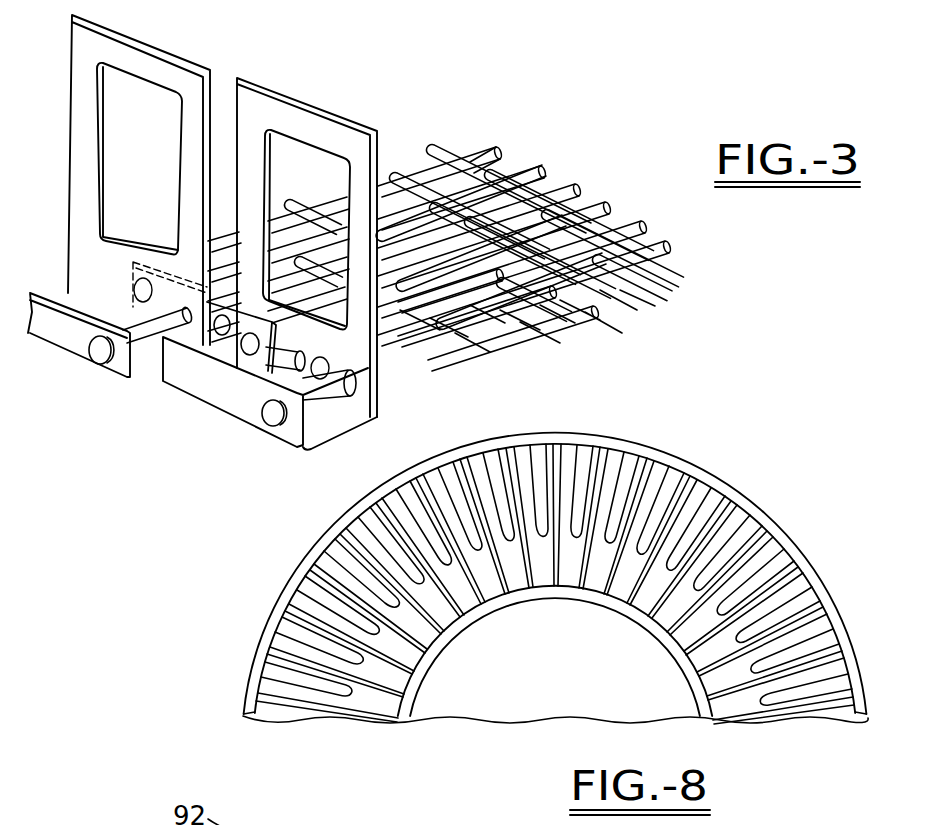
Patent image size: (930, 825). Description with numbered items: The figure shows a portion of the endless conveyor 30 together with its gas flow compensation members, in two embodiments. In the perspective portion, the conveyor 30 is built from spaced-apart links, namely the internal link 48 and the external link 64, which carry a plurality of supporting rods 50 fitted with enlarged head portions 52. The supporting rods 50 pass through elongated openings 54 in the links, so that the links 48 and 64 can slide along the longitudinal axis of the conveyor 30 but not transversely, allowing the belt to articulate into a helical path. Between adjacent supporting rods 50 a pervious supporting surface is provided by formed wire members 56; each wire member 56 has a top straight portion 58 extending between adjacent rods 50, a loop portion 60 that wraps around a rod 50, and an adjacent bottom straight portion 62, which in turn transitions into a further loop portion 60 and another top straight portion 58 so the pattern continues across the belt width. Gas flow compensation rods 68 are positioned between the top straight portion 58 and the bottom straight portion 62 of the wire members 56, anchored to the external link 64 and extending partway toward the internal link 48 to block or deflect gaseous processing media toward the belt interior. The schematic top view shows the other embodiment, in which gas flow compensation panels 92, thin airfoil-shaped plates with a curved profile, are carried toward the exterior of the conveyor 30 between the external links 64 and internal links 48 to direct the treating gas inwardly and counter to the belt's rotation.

In FIG. 3, the endless conveyor 30 is at (447, 114).
In FIG. 8, the endless conveyor 30 is at (754, 486).
In FIG. 3, the internal link 48 is at (277, 115).
In FIG. 8, the internal link 48 is at (430, 670).
In FIG. 3, the supporting rod 50 is at (586, 192).
In FIG. 3, the enlarged head portion 52 is at (100, 353).
In FIG. 3, the elongated opening 54 is at (220, 330).
In FIG. 3, the formed wire member 56 is at (598, 328).
In FIG. 3, the top straight portion 58 is at (430, 147).
In FIG. 3, the loop portion 60 is at (593, 307).
In FIG. 3, the bottom straight portion 62 is at (592, 322).
In FIG. 8, the external link 64 is at (793, 538).
In FIG. 3, the gas flow compensation rod 68 is at (495, 140).
In FIG. 8, the gas flow compensation panel 92 is at (300, 587).